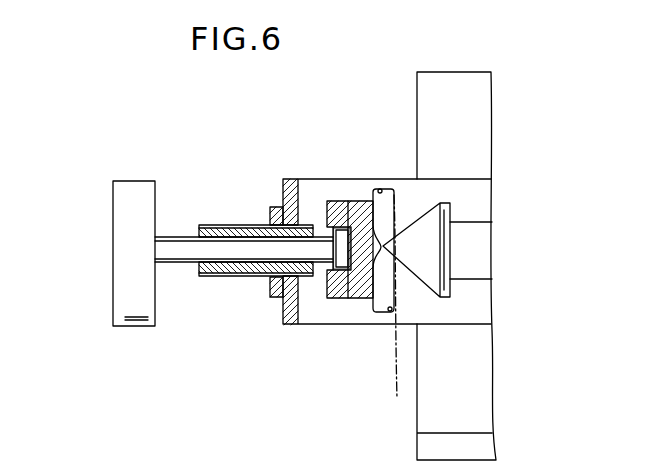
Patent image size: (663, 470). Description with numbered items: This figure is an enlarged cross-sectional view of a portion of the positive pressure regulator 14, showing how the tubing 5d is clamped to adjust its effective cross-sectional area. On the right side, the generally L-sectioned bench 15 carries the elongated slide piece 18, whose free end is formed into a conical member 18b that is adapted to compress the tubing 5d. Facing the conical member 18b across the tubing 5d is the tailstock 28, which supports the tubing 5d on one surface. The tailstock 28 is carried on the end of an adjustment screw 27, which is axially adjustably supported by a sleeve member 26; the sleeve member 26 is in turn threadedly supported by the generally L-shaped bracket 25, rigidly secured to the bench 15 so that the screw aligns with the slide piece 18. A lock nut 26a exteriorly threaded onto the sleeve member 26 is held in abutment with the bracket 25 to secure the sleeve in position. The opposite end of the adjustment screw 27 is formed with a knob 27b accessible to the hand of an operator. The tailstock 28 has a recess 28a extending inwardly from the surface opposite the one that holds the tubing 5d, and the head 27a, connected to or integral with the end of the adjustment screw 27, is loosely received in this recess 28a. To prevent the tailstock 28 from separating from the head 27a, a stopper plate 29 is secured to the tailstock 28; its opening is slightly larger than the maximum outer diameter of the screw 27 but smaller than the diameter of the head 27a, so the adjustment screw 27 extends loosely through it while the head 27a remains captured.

The positive pressure regulator 14 is at (398, 64).
The bench 15 is at (452, 72).
The slide piece 18 is at (477, 209).
The conical member 18b is at (427, 210).
The bracket 25 is at (307, 179).
The sleeve member 26 is at (218, 277).
The lock nut 26a is at (278, 297).
The adjustment screw 27 is at (183, 237).
The head 27a is at (337, 227).
The knob 27b is at (133, 181).
The tailstock 28 is at (360, 298).
The recess 28a is at (344, 298).
The stopper plate 29 is at (339, 272).
The tubing 5d is at (396, 309).